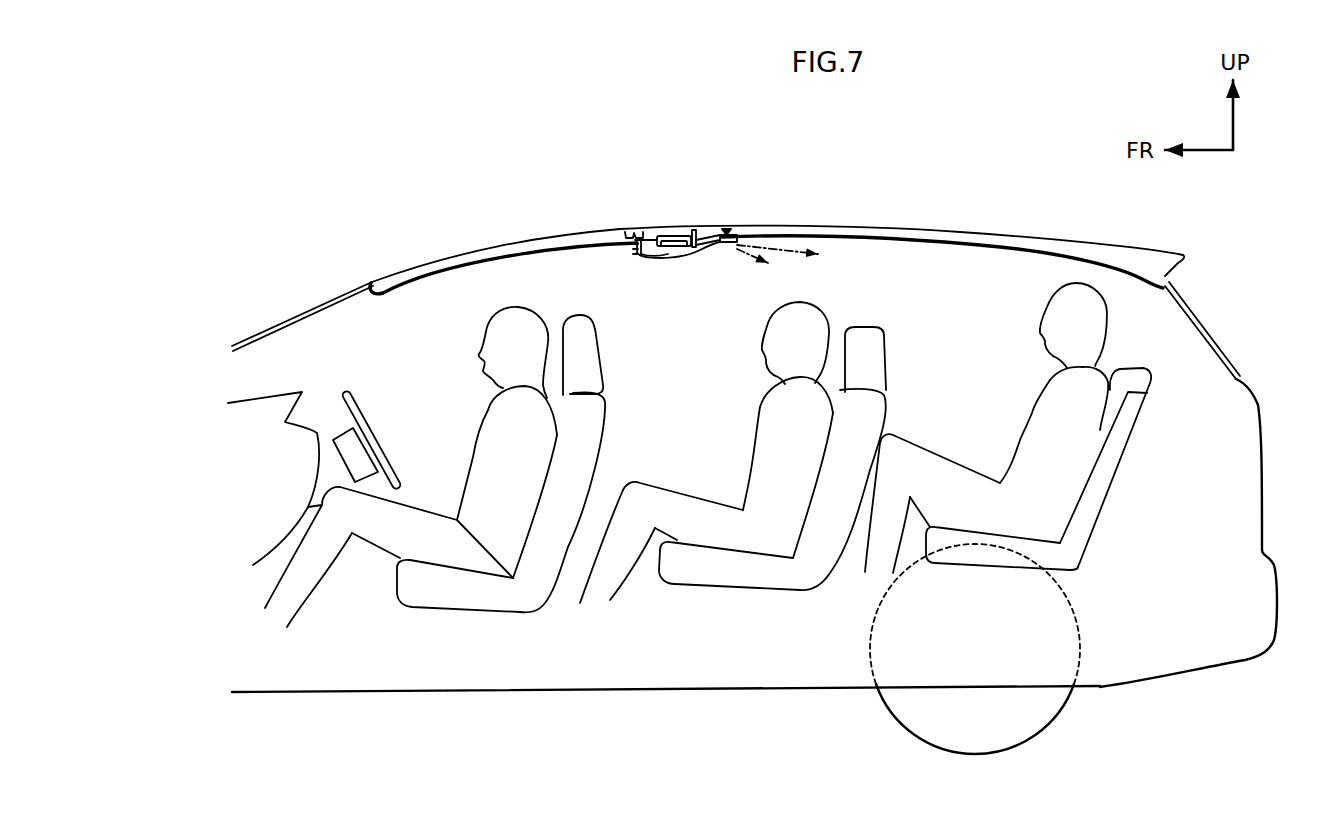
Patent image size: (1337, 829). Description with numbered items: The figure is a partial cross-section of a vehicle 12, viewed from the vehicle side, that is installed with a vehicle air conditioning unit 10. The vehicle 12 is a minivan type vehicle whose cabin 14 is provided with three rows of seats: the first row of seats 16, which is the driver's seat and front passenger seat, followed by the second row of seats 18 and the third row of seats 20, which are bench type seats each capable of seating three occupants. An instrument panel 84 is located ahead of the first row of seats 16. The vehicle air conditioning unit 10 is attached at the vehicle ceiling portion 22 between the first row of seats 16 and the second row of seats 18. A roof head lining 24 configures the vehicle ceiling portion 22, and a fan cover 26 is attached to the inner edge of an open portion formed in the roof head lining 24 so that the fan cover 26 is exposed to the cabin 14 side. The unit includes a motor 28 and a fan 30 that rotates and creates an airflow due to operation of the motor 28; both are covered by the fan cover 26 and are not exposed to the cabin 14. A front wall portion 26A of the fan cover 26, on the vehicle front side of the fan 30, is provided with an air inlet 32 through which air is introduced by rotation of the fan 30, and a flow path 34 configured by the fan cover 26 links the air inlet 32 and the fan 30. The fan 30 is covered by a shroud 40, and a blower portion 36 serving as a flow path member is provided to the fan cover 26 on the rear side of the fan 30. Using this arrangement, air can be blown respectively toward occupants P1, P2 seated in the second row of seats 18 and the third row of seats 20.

The vehicle air conditioning unit 10 is at (656, 326).
The vehicle 12 is at (382, 200).
The cabin 14 is at (706, 424).
The first row of seats 16 is at (582, 453).
The second row of seats 18 is at (868, 413).
The third row of seats 20 is at (1112, 453).
The vehicle ceiling portion 22 is at (948, 230).
The roof head lining 24 is at (921, 246).
The fan cover 26 is at (667, 275).
The front wall portion 26A is at (635, 245).
The motor 28 is at (667, 238).
The fan 30 is at (675, 236).
The air inlet 32 is at (637, 252).
The flow path 34 is at (648, 256).
The blower portion 36 is at (726, 254).
The shroud 40 is at (651, 233).
The instrument panel 84 is at (317, 431).
The occupant P1 is at (762, 403).
The occupant P2 is at (1033, 400).